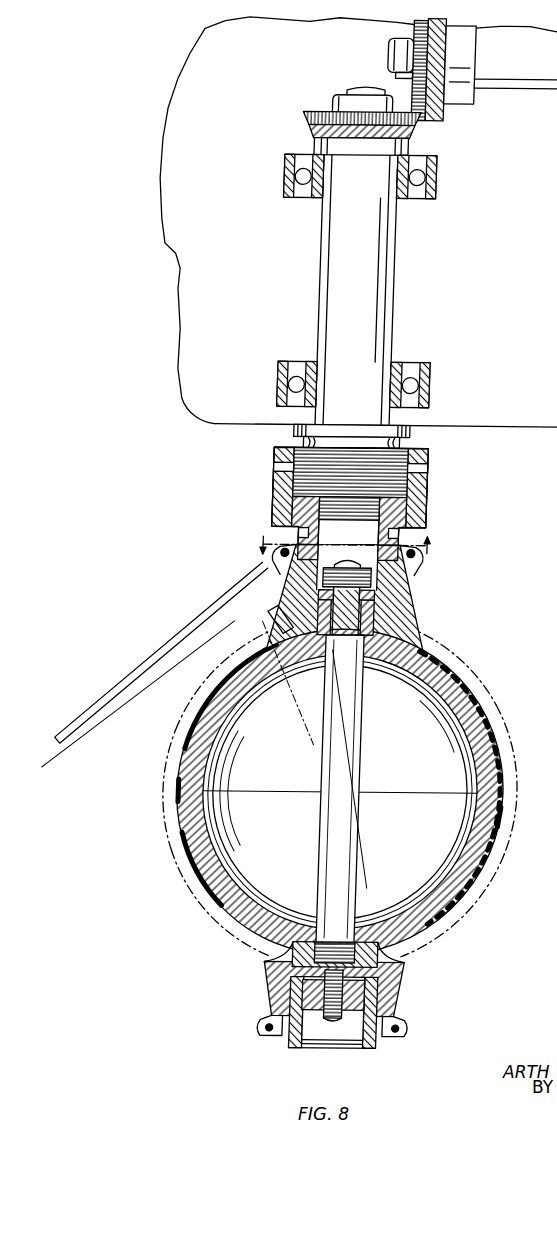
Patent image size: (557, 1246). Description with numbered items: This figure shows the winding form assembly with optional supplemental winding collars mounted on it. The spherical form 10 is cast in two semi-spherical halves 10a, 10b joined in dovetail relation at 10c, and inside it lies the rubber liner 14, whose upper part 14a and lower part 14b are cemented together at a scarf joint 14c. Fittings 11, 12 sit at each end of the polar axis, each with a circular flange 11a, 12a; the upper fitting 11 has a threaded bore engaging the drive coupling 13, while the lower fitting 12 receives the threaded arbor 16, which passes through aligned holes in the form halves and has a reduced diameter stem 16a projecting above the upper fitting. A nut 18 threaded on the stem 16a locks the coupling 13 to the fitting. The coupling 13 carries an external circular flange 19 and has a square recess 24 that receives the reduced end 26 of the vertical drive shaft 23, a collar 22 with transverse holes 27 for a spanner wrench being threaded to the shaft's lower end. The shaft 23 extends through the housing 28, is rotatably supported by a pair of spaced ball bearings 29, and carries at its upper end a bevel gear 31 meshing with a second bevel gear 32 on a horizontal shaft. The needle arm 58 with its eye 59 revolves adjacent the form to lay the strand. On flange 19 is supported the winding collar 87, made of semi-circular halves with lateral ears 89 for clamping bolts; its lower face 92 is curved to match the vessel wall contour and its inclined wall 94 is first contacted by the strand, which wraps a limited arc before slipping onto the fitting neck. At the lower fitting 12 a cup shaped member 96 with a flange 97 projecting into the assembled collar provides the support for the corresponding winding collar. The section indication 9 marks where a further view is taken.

The section line 9- 9 is at (342, 546).
The spherical form 10 is at (187, 850).
The semi-spherical half 10a is at (202, 714).
The semi-spherical half 10b is at (476, 910).
The dovetail joint 10c is at (177, 792).
The fitting 11 is at (257, 626).
The flange 11a is at (368, 661).
The fitting 12 is at (411, 962).
The flange 12a is at (378, 938).
The drive coupling 13 is at (399, 530).
The inner rubber liner 14 is at (505, 752).
The upper semi-spherical part 14a is at (185, 742).
The lower semi-spherical part 14b is at (203, 890).
The scarf joint 14c is at (191, 812).
The arbor 16 is at (359, 762).
The reduced diameter stem 16a is at (344, 648).
The nut 18 is at (394, 600).
The external circular flange 19 is at (398, 585).
The collar 22 is at (418, 502).
The vertical drive shaft 23 is at (375, 270).
The recess 24 is at (292, 535).
The reduced end 26 is at (284, 517).
The transverse holes 27 is at (264, 468).
The housing 28 is at (193, 426).
The ball bearings 29 is at (412, 200).
The bevel gear 31 is at (296, 114).
The second bevel gear 32 is at (384, 86).
The needle arm 58 is at (182, 637).
The eye 59 is at (261, 570).
The winding collar 87 is at (372, 608).
The lateral ears 89 is at (404, 558).
The curved lower face 92 is at (427, 640).
The inclined wall 94 is at (287, 620).
The cup shaped member 96 is at (386, 1042).
The flange 97 is at (277, 1012).